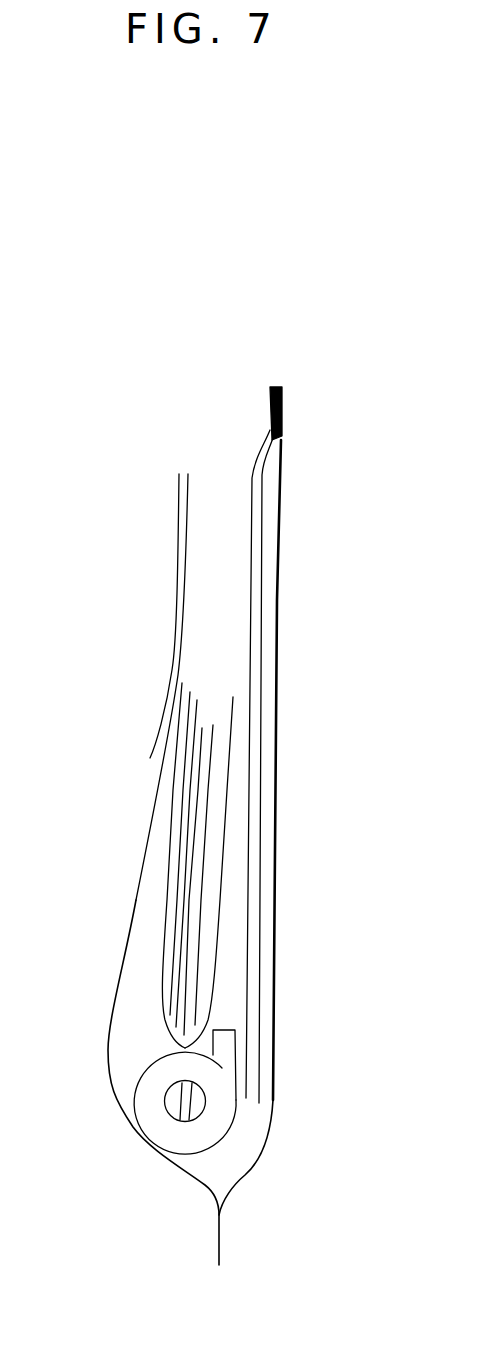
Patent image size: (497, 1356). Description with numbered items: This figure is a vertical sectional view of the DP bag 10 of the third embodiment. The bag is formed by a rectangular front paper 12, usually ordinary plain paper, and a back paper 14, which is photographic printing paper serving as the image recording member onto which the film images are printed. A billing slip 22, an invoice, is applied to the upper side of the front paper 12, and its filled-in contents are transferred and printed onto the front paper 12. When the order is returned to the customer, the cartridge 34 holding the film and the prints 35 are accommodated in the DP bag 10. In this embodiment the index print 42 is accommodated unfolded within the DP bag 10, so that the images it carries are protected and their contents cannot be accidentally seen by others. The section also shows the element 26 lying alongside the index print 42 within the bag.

The DP bag 10 is at (277, 374).
The front paper 12 is at (185, 1172).
The back paper 14 is at (260, 1177).
The billing slip 22 is at (178, 579).
The outer sleeve 26 is at (252, 515).
The cartridge 34 is at (157, 1121).
The prints 35 is at (209, 710).
The index print 42 is at (263, 549).